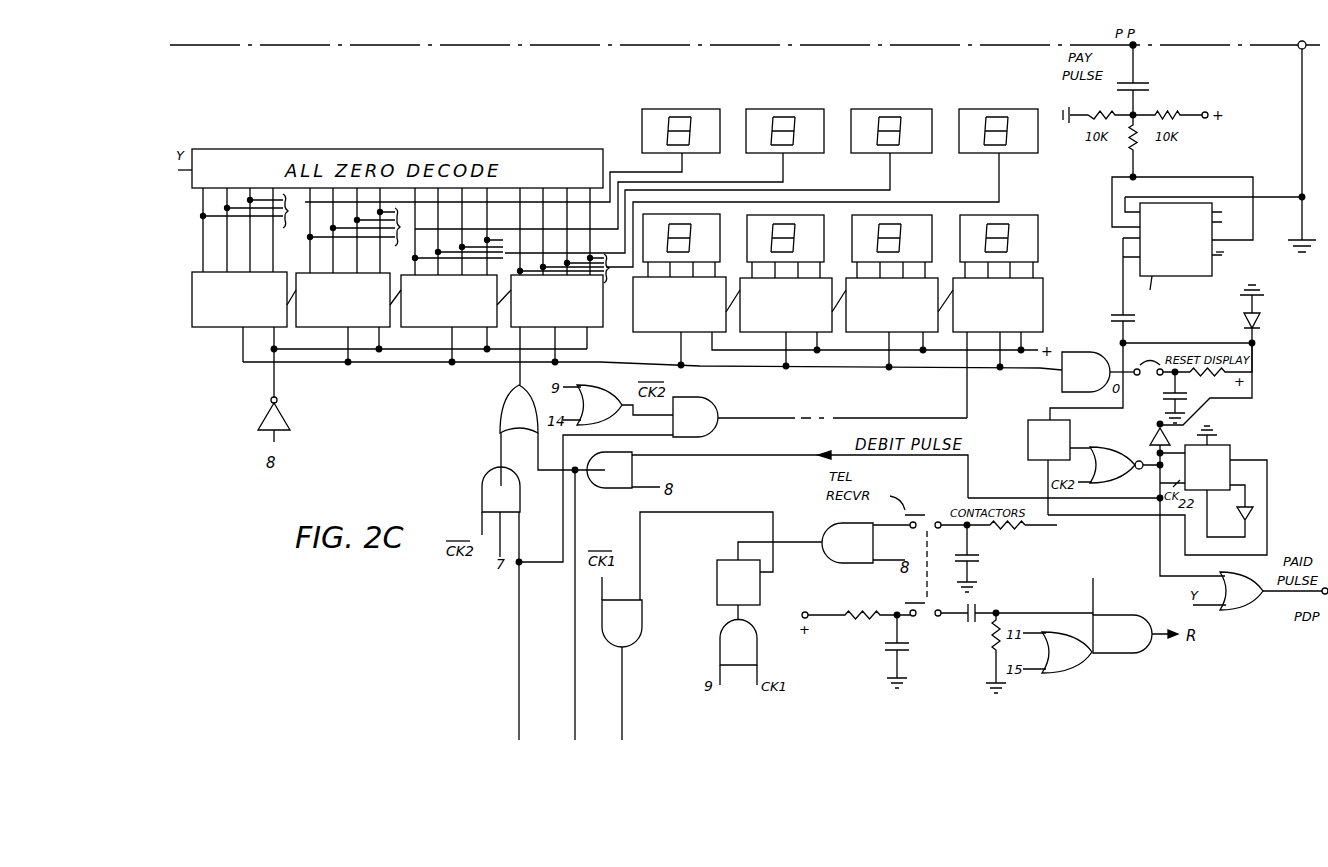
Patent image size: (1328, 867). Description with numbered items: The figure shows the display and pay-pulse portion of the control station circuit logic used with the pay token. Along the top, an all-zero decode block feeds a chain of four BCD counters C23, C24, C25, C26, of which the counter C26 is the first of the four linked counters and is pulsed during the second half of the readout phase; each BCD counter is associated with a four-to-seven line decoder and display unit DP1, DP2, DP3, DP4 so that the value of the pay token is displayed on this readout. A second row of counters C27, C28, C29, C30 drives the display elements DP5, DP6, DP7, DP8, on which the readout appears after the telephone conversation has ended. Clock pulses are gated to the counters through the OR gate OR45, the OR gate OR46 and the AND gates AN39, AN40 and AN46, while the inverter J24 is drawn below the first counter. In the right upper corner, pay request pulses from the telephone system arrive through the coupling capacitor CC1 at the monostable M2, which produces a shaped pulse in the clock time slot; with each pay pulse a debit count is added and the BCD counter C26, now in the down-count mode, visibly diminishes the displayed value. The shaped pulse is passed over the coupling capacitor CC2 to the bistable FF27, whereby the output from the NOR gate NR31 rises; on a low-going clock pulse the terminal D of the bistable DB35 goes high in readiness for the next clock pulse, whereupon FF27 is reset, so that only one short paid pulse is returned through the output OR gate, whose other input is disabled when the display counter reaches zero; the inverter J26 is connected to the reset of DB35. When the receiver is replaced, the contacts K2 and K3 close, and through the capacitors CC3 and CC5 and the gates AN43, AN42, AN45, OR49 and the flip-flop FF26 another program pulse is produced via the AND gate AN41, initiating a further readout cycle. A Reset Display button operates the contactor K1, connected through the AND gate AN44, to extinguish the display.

The BCD up/down counter C23 is at (241, 299).
The BCD up/down counter C24 is at (343, 300).
The BCD up/down counter C25 is at (449, 301).
The BCD counter C26 is at (557, 301).
The up/down counter with reset C27 is at (679, 304).
The up/down counter with reset C28 is at (786, 305).
The up/down counter with reset C29 is at (892, 305).
The up/down counter with clock and reset C30 is at (998, 305).
The decoder and display unit DP1 is at (681, 122).
The decoder and display unit DP2 is at (785, 122).
The decoder and display unit DP3 is at (891, 122).
The decoder and display unit DP4 is at (998, 122).
The display element DP5 is at (720, 245).
The display element DP6 is at (825, 245).
The display element DP7 is at (933, 247).
The display element DP8 is at (1040, 217).
The inverter J24 is at (287, 419).
The OR gate OR45 is at (519, 409).
The OR gate OR46 is at (945, 497).
The OR gate OR49 is at (1057, 652).
The AND gate AN39 is at (501, 586).
The AND gate AN40 is at (777, 474).
The AND gate AN41 is at (687, 626).
The AND gate AN42 is at (738, 652).
The AND gate AN43 is at (866, 543).
The AND gate AN44 is at (1098, 372).
The AND gate AN45 is at (1135, 615).
The AND gate AN46 is at (820, 417).
The set-reset flip-flop FF26 is at (755, 581).
The bistable FF27 is at (1047, 458).
The NOR gate NR31 is at (1119, 465).
The bistable DB35 is at (1217, 458).
The inverter J26 is at (1230, 511).
The monostable M2 is at (1207, 233).
The coupling capacitor CC1 is at (1148, 81).
The coupling capacitor CC2 is at (1108, 329).
The coupling capacitor CC3 is at (993, 559).
The coupling capacitor CC5 is at (970, 598).
The contactor K1 is at (1162, 380).
The contact K2 is at (981, 556).
The contact K3 is at (936, 601).